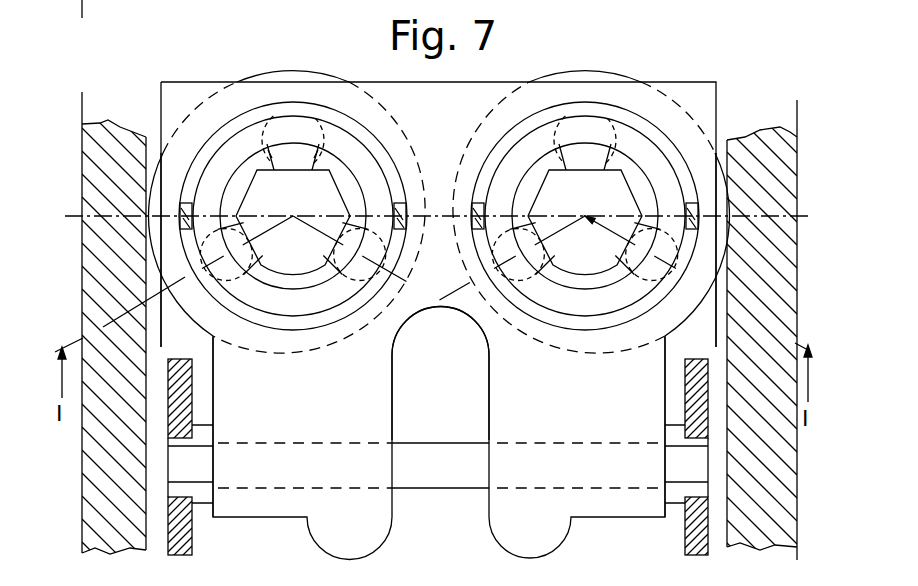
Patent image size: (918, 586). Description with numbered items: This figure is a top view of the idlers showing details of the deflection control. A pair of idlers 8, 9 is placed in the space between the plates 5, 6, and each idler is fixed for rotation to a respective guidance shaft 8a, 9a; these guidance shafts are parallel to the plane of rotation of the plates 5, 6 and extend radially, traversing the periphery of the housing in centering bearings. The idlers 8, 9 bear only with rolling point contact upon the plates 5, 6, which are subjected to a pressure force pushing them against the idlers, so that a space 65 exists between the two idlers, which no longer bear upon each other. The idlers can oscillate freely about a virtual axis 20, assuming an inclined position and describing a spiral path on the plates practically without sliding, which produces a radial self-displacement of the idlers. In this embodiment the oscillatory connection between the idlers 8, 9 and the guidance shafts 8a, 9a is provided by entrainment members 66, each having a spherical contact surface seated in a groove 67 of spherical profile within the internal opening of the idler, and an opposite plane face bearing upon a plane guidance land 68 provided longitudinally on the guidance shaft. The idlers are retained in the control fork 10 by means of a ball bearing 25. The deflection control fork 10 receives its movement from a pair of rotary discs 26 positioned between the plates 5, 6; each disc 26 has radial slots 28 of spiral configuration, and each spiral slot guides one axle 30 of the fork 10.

The plate 5 is at (150, 297).
The plate 6 is at (747, 300).
The idler 8 is at (307, 78).
The guidance shaft 8a is at (289, 252).
The idler 9 is at (595, 78).
The guidance shaft 9a is at (555, 207).
The control fork 10 is at (483, 95).
The virtual axis 20 is at (127, 207).
The ball bearing 25 is at (733, 212).
The rotary disc 26 is at (192, 513).
The radial slot 28 is at (185, 441).
The axle 30 is at (425, 468).
The space 65 is at (437, 237).
The entrainment member 66 is at (318, 167).
The groove 67 is at (262, 130).
The plane guidance land 68 is at (325, 170).